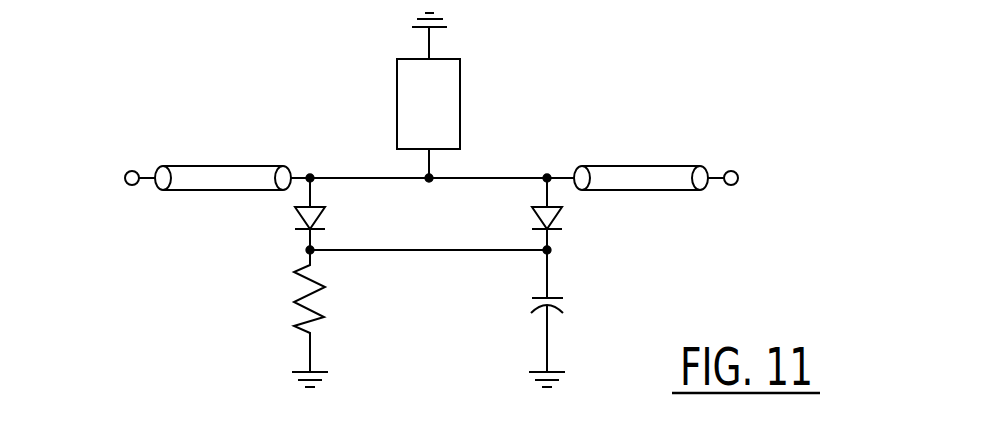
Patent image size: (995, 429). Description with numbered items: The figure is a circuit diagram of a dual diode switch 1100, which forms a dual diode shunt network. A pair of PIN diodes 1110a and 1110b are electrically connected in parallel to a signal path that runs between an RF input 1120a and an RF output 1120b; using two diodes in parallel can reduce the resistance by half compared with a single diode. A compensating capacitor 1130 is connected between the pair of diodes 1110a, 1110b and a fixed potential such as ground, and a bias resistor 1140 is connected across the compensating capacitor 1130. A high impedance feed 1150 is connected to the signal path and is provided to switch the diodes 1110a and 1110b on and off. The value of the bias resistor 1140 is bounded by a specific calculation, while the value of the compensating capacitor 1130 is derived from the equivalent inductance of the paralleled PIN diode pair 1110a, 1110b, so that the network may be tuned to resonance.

The dual diode switch 1100 is at (441, 200).
The RF input 1120a is at (170, 153).
The RF output 1120b is at (693, 150).
The high impedance (Hi-Z) feed 1150 is at (472, 95).
The PIN diode 1110a is at (256, 218).
The PIN diode 1110b is at (589, 215).
The bias resistor 1140 is at (307, 318).
The compensating capacitor 1130 is at (586, 318).